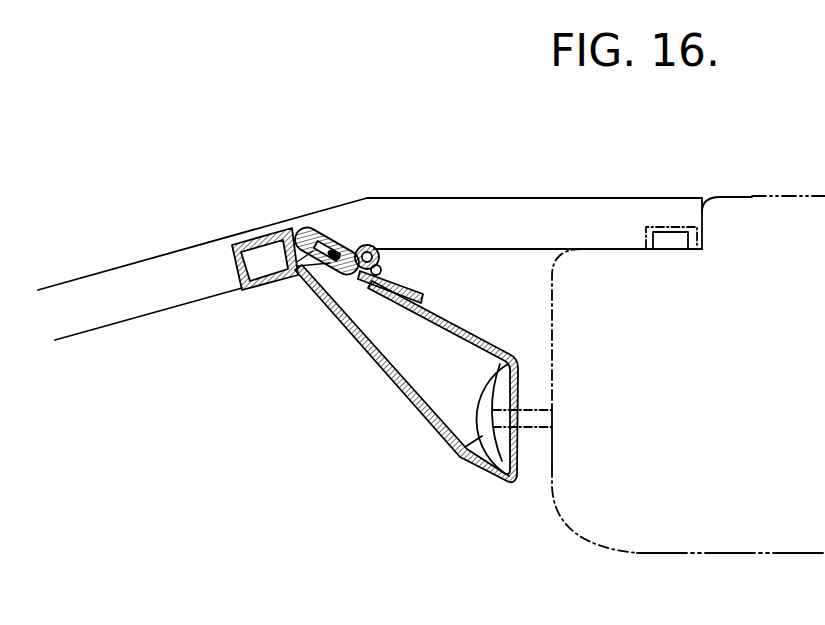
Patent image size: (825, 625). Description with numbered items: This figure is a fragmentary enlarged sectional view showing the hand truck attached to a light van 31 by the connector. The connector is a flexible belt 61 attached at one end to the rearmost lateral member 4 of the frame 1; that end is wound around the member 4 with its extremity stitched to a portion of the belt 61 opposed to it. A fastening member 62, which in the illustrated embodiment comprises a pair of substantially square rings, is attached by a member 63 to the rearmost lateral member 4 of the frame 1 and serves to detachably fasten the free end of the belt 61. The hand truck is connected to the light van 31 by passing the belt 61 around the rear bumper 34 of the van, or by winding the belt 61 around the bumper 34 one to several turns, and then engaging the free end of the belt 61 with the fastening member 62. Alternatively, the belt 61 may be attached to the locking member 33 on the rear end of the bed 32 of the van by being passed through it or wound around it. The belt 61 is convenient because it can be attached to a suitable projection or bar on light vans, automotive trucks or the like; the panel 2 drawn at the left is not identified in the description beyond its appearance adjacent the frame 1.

The frame 1 is at (202, 269).
The panel 2 is at (95, 277).
The rearmost lateral member 4 is at (248, 243).
The light van 31 is at (630, 555).
The bed 32 is at (799, 194).
The locking member 33 is at (666, 227).
The rear bumper 34 is at (465, 462).
The flexible belt 61 is at (465, 330).
The fastening member 62 is at (368, 246).
The member 63 is at (297, 236).